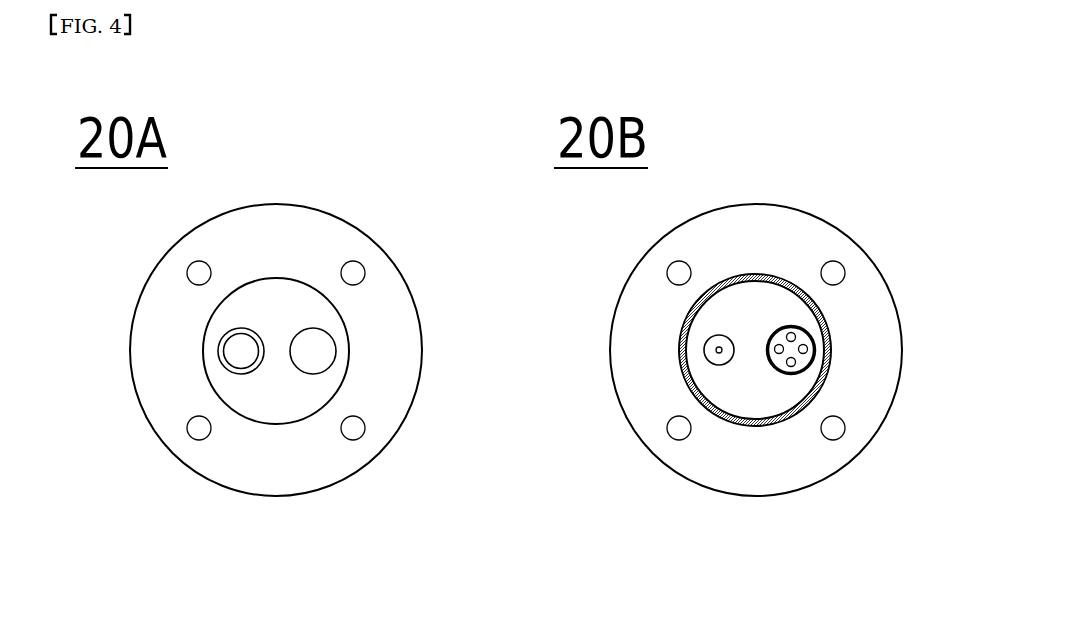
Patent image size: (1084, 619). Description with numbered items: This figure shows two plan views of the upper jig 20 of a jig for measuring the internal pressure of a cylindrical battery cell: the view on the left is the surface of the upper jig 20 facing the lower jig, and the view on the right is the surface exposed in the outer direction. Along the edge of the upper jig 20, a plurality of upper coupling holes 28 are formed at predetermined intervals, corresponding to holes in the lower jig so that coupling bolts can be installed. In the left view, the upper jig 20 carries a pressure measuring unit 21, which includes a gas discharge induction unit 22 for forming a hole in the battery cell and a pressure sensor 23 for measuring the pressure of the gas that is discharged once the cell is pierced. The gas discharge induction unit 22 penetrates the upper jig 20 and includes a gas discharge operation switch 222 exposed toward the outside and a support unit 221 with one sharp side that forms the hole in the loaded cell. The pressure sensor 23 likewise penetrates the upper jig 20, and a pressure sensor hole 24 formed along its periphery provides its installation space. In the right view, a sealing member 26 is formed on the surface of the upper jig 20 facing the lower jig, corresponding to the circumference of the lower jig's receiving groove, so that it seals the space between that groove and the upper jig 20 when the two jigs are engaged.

The upper jig 20 is at (395, 303).
The pressure measuring unit 21 is at (203, 343).
The gas discharge induction unit 22 is at (227, 333).
The gas discharge operation switch 222 is at (242, 343).
The pressure sensor 23 is at (315, 340).
The pressure sensor hole 24 is at (813, 362).
The support unit 221 is at (719, 347).
The sealing member 26 is at (753, 425).
The upper coupling hole 28 is at (198, 428).